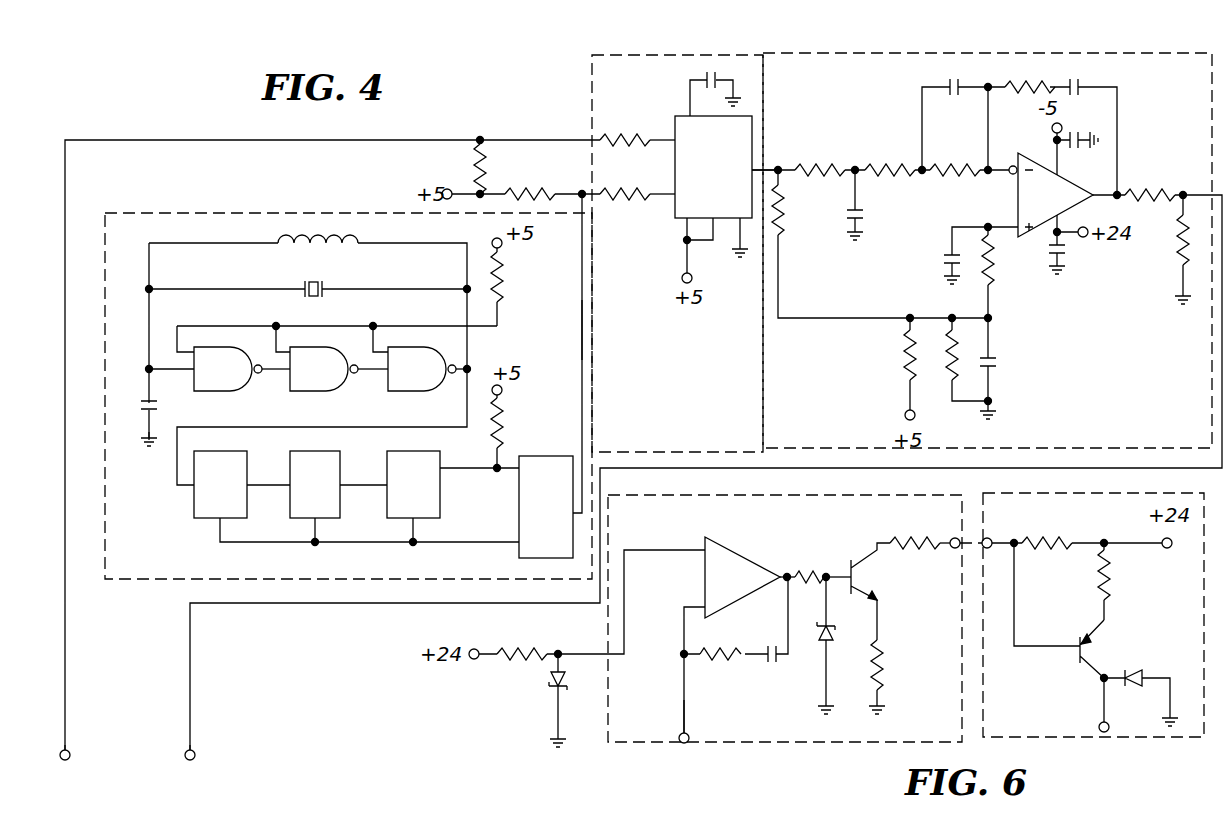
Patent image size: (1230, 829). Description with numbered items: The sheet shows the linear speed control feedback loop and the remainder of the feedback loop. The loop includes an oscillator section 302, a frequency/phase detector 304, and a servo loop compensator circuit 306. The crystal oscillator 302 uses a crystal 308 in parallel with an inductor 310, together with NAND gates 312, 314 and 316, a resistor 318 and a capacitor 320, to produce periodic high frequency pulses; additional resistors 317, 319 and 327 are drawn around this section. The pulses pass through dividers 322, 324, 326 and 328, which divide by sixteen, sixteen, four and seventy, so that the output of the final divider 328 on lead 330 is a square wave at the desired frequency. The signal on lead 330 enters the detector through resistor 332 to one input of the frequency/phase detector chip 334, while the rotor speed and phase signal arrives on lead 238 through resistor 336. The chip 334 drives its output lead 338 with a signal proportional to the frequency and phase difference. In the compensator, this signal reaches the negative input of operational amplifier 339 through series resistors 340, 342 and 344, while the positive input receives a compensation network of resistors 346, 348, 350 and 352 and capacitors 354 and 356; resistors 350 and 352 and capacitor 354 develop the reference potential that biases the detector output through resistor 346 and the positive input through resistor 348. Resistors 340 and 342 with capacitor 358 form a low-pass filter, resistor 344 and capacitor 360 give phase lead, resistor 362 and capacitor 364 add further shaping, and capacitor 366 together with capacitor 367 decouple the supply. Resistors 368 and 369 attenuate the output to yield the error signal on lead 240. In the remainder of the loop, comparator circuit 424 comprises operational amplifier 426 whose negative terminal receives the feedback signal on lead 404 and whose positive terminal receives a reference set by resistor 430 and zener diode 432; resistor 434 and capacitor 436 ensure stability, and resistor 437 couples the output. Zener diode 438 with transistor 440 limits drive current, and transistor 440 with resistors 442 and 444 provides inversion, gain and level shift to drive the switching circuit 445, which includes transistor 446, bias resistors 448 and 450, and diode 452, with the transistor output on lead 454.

In FIG. 4, the lead 238 is at (78, 714).
In FIG. 4, the lead 240 is at (203, 714).
In FIG. 4, the oscillator section 302 is at (118, 210).
In FIG. 4, the frequency/phase detector 304 is at (592, 96).
In FIG. 4, the servo loop compensator circuit 306 is at (853, 52).
In FIG. 4, the crystal 308 is at (326, 288).
In FIG. 4, the inductor 310 is at (290, 240).
In FIG. 4, the NAND gate 312 is at (236, 384).
In FIG. 4, the NAND gate 314 is at (332, 384).
In FIG. 4, the NAND gate 316 is at (430, 384).
In FIG. 4, the resistor 317 is at (470, 165).
In FIG. 4, the resistor 318 is at (503, 287).
In FIG. 4, the resistor 319 is at (518, 194).
In FIG. 4, the capacitor 320 is at (156, 405).
In FIG. 4, the divider 322 is at (192, 505).
In FIG. 4, the divider 324 is at (302, 451).
In FIG. 4, the divider 326 is at (395, 451).
In FIG. 4, the resistor 327 is at (500, 420).
In FIG. 4, the divider 328 is at (519, 510).
In FIG. 4, the lead 330 is at (582, 330).
In FIG. 4, the resistor 332 is at (620, 200).
In FIG. 4, the frequency/phase detector chip 334 is at (680, 212).
In FIG. 4, the resistor 336 is at (622, 140).
In FIG. 4, the output lead 338 is at (780, 165).
In FIG. 4, the operational amplifier 339 is at (1018, 196).
In FIG. 4, the resistor 340 is at (818, 160).
In FIG. 4, the resistor 342 is at (880, 150).
In FIG. 4, the resistor 344 is at (948, 165).
In FIG. 4, the resistor 346 is at (789, 211).
In FIG. 4, the resistor 348 is at (994, 280).
In FIG. 4, the resistor 350 is at (906, 360).
In FIG. 4, the resistor 352 is at (946, 382).
In FIG. 4, the capacitor 354 is at (998, 362).
In FIG. 4, the capacitor 356 is at (952, 262).
In FIG. 4, the capacitor 358 is at (860, 216).
In FIG. 4, the capacitor 360 is at (948, 85).
In FIG. 4, the resistor 362 is at (1012, 86).
In FIG. 4, the capacitor 364 is at (1078, 88).
In FIG. 4, the capacitor 366 is at (1062, 252).
In FIG. 4, the capacitor 367 is at (1084, 135).
In FIG. 4, the resistor 368 is at (1150, 190).
In FIG. 4, the resistor 369 is at (1179, 249).
In FIG. 6, the lead 404 is at (698, 712).
In FIG. 6, the comparator circuit 424 is at (628, 742).
In FIG. 6, the operational amplifier 426 is at (738, 548).
In FIG. 6, the resistor 430 is at (498, 654).
In FIG. 6, the zener diode 432 is at (550, 690).
In FIG. 6, the resistor 434 is at (725, 674).
In FIG. 6, the capacitor 436 is at (765, 639).
In FIG. 6, the resistor 437 is at (798, 572).
In FIG. 6, the zener diode 438 is at (823, 660).
In FIG. 6, the transistor 440 is at (850, 558).
In FIG. 6, the resistor 442 is at (888, 665).
In FIG. 6, the resistor 444 is at (918, 530).
In FIG. 6, the switching circuit 445 is at (1133, 740).
In FIG. 6, the transistor 446 is at (1079, 643).
In FIG. 6, the bias resistor 448 is at (1108, 575).
In FIG. 6, the bias resistor 450 is at (1047, 562).
In FIG. 6, the diode 452 is at (1140, 670).
In FIG. 6, the lead 454 is at (1100, 688).